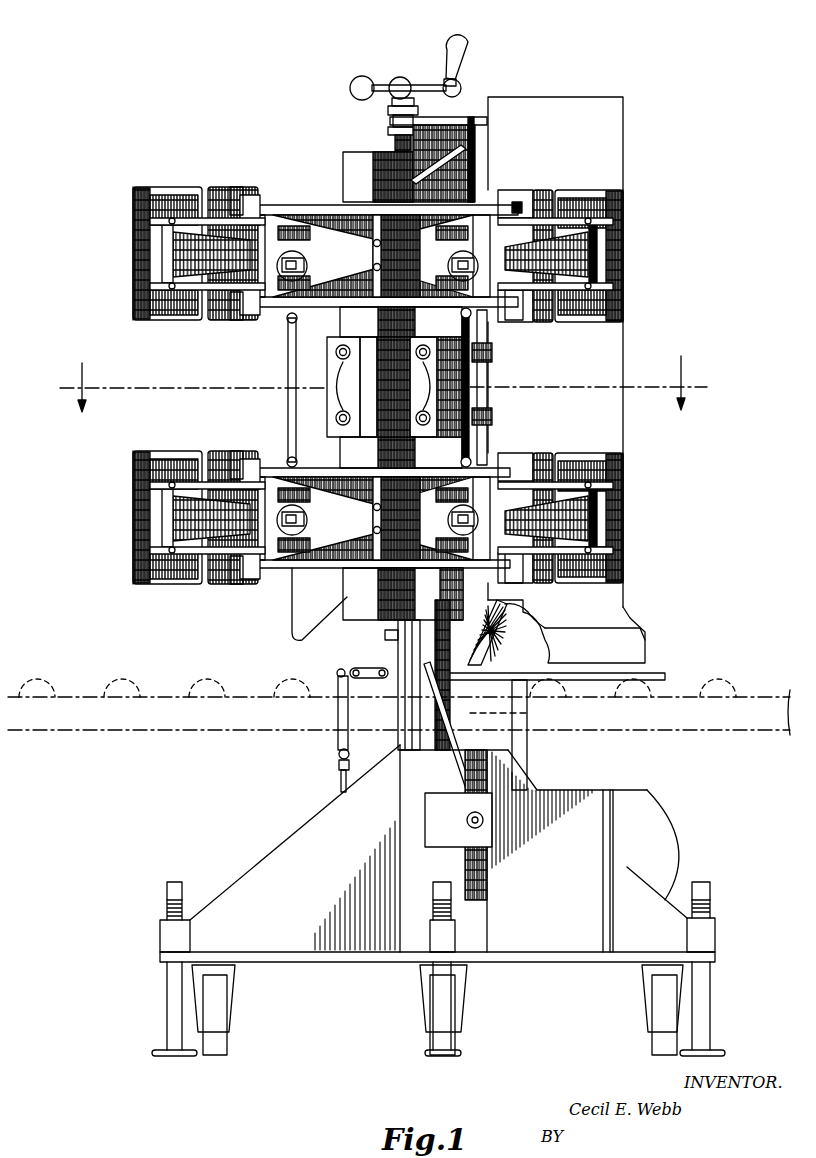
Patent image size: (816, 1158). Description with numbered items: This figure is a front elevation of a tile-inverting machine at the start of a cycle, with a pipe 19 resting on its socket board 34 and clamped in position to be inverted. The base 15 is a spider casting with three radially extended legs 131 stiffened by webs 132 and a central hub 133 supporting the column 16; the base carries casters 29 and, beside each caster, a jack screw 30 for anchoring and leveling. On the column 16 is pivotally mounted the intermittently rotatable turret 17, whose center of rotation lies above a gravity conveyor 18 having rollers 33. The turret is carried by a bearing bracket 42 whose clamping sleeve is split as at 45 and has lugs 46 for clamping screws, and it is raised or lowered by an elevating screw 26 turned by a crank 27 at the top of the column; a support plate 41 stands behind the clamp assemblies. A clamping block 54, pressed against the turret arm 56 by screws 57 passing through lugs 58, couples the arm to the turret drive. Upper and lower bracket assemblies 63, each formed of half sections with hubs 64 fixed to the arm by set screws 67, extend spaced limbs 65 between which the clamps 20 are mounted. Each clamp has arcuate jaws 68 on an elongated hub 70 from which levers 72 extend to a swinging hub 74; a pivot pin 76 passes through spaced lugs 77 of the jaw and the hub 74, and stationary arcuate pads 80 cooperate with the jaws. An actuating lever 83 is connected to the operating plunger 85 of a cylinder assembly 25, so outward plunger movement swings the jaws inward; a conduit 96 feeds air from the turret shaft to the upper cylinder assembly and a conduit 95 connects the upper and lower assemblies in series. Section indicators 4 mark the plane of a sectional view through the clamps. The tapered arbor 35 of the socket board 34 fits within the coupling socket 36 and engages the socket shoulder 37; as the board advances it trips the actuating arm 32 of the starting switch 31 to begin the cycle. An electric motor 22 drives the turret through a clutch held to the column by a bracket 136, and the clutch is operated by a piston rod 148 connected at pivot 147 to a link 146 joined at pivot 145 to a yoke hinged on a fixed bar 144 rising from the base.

The section line 4- 4 is at (381, 384).
The base 15 is at (437, 853).
The column 16 is at (398, 658).
The turret 17 is at (354, 148).
The conveyor 18 is at (92, 736).
The pipe 19 is at (624, 348).
The clamps 20 is at (582, 186).
The electric motor 22 is at (662, 830).
The cylinder assemblies 25 is at (446, 500).
The elevating screw 26 is at (393, 140).
The crank 27 is at (470, 40).
The casters 29 is at (222, 1006).
The jack screw 30 is at (716, 906).
The electrical starting switch 31 is at (490, 830).
The actuating arm 32 is at (428, 698).
The rollers 33 is at (48, 678).
The socket boards 34 is at (662, 676).
The tapered support arbors 35 is at (540, 645).
The coupling socket 36 is at (486, 646).
The socket shoulder 37 is at (527, 622).
The support plate 41 is at (608, 96).
The bearing bracket 42 is at (487, 384).
The split 45 is at (492, 350).
The lugs 46 is at (492, 412).
The clamping block 54 is at (336, 395).
The turret arm 56 is at (356, 176).
The screws 57 is at (335, 348).
The lugs 58 is at (335, 367).
The bracket assemblies 63 is at (306, 200).
The hubs 64 is at (340, 246).
The limbs 65 is at (482, 205).
The set screws 67 is at (373, 245).
The jaws 68 is at (612, 302).
The elongated hub 70 is at (521, 240).
The levers 72 is at (223, 234).
The swinging hub 74 is at (170, 256).
The pivot pin 76 is at (174, 218).
The lugs 77 is at (165, 220).
The stationary arcuate pads 80 is at (244, 307).
The actuating lever 83 is at (490, 495).
The operating plunger 85 is at (452, 282).
The conduit 95 is at (288, 363).
The conduit 96 is at (468, 138).
The legs 131 is at (283, 951).
The webs 132 is at (235, 898).
The central hub 133 is at (400, 808).
The bracket 136 is at (398, 632).
The fixed bar 144 is at (524, 744).
The pivot connection 145 is at (336, 672).
The link 146 is at (337, 710).
The pivot connection 147 is at (338, 753).
The piston rod 148 is at (343, 780).